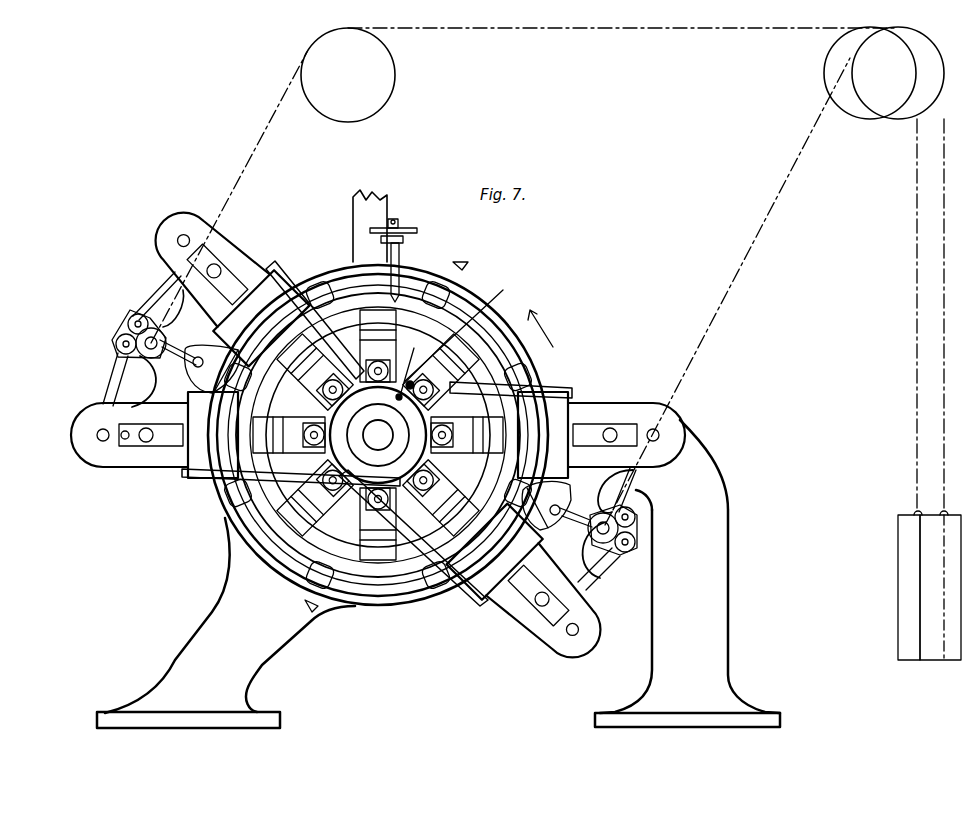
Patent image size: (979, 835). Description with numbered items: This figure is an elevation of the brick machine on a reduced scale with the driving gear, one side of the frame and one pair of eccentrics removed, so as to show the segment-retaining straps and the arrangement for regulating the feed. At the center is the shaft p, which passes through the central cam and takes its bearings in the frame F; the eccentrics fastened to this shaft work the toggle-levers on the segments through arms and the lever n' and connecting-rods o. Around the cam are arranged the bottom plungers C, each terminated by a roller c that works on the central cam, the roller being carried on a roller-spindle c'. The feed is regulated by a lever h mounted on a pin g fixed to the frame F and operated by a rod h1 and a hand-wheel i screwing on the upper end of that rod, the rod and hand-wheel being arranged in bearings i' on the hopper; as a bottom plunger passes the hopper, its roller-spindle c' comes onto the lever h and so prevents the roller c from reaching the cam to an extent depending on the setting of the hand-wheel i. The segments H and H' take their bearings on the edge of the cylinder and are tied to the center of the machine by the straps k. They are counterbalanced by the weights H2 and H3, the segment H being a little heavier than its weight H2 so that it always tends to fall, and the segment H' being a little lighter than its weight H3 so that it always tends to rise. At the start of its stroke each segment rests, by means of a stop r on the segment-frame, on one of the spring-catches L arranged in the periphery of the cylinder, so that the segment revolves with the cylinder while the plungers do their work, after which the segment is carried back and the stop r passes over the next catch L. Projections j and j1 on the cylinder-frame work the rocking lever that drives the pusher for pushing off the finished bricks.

The shaft p is at (378, 435).
The lever h is at (378, 435).
The bottom plunger C is at (378, 435).
The roller c is at (378, 447).
The roller-spindle c' is at (365, 444).
The projection j is at (373, 435).
The projection j1 is at (410, 367).
The pin g is at (479, 329).
The segment-retaining strap k is at (282, 279).
The lever n' is at (388, 432).
The connecting-rod o is at (162, 292).
The segment H is at (157, 348).
The segment H' is at (592, 524).
The stop r is at (228, 350).
The spring-catch L is at (220, 372).
The frame F is at (438, 574).
The rod h1 is at (402, 270).
The hand-wheel i is at (403, 227).
The bearing i' is at (403, 217).
The weight H2 is at (910, 585).
The weight H3 is at (940, 585).